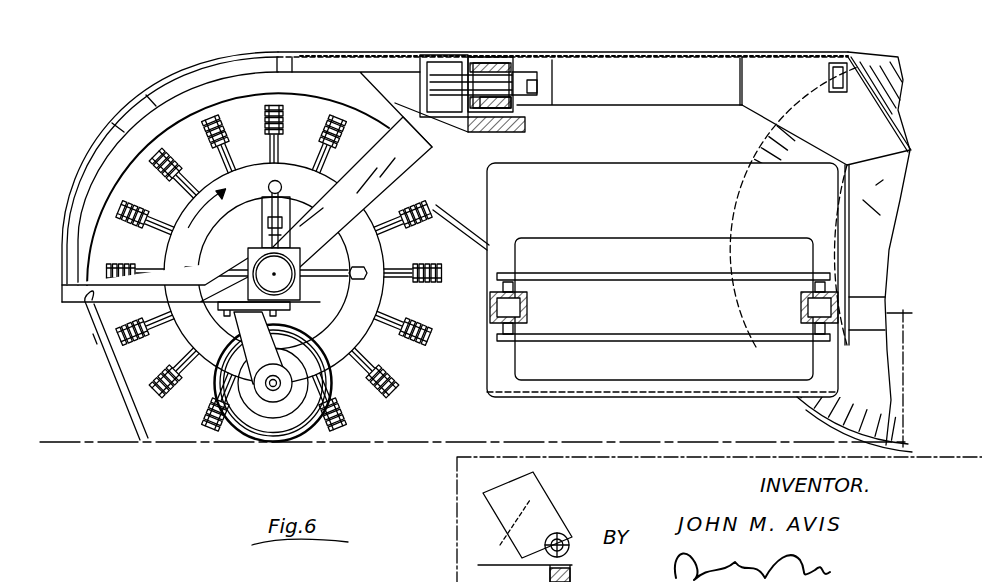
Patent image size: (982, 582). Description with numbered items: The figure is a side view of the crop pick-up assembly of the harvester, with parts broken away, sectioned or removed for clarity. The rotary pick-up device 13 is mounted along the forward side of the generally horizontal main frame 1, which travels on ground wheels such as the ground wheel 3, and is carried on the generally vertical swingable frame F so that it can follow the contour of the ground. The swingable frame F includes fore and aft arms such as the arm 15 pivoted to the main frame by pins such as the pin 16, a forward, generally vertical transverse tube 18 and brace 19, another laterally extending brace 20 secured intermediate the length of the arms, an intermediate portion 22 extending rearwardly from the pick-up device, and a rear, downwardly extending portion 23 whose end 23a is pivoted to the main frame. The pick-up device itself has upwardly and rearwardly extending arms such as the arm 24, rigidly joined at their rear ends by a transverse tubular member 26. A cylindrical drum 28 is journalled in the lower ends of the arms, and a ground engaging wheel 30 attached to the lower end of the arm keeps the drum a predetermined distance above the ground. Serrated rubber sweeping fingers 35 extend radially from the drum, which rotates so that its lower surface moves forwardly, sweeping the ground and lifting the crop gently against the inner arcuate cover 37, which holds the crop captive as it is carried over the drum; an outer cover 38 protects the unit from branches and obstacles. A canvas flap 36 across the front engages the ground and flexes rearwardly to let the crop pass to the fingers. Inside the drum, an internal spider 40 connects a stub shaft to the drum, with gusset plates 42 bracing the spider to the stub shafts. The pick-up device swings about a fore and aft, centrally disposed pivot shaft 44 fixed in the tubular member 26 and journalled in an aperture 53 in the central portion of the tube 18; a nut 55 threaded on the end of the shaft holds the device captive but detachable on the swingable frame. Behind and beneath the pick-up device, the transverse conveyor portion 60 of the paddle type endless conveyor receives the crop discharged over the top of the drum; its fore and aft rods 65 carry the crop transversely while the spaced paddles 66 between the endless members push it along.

The main frame 1 is at (703, 63).
The ground wheel 3 is at (882, 58).
The rotary pick-up device 13 is at (155, 77).
The arm 15 is at (742, 60).
The tube 18 is at (492, 58).
The brace 19 is at (526, 128).
The brace 20 is at (826, 68).
The intermediate portion 22 is at (640, 105).
The rear downwardly extending portion 23 is at (880, 203).
The end 23a is at (572, 548).
The arm 24 is at (414, 158).
The tubular member 26 is at (433, 58).
The drum 28 is at (382, 342).
The ground engaging wheel 30 is at (262, 437).
The sweeping finger 35 is at (380, 400).
The canvas flap 36 is at (108, 386).
The inner arcuate cover 37 is at (240, 92).
The outer cover 38 is at (268, 52).
The internal spider 40 is at (215, 264).
The gusset plate 42 is at (272, 206).
The pivot shaft 44 is at (462, 74).
The aperture 53 is at (489, 93).
The nut 55 is at (522, 72).
The transverse conveyor portion 60 is at (662, 300).
The rod 65 is at (612, 283).
The paddle 66 is at (598, 252).
The pin 16 is at (568, 535).
The swingable frame F is at (588, 54).